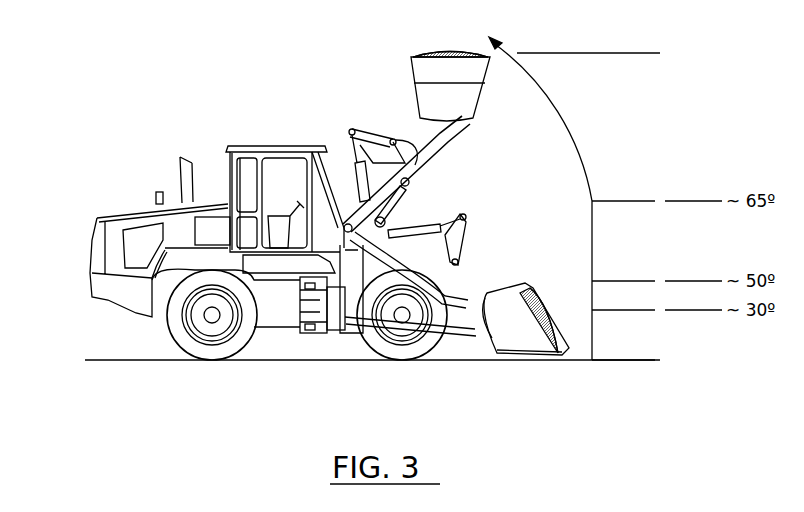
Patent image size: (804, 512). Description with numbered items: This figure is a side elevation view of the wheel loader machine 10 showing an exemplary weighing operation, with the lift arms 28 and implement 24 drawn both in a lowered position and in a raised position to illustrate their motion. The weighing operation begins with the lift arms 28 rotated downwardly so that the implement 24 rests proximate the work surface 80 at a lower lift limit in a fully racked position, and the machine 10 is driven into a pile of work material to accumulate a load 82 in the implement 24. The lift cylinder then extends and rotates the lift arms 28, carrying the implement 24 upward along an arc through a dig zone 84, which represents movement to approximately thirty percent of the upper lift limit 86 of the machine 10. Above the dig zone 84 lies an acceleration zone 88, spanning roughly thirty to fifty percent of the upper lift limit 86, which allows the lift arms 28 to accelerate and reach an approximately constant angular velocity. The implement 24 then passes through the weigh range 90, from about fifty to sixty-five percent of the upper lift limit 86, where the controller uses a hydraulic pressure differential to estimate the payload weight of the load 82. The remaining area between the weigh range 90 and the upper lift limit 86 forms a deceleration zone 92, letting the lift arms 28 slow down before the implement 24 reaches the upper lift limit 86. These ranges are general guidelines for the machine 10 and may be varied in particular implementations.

The machine 10 is at (150, 163).
The implement 24 is at (433, 90).
The lift arms 28 is at (374, 208).
The work surface 80 is at (147, 362).
The load 82 is at (489, 54).
The dig zone 84 is at (655, 310).
The upper lift limit 86 is at (577, 53).
The acceleration zone 88 is at (655, 281).
The weigh range 90 is at (655, 201).
The deceleration zone 92 is at (655, 53).